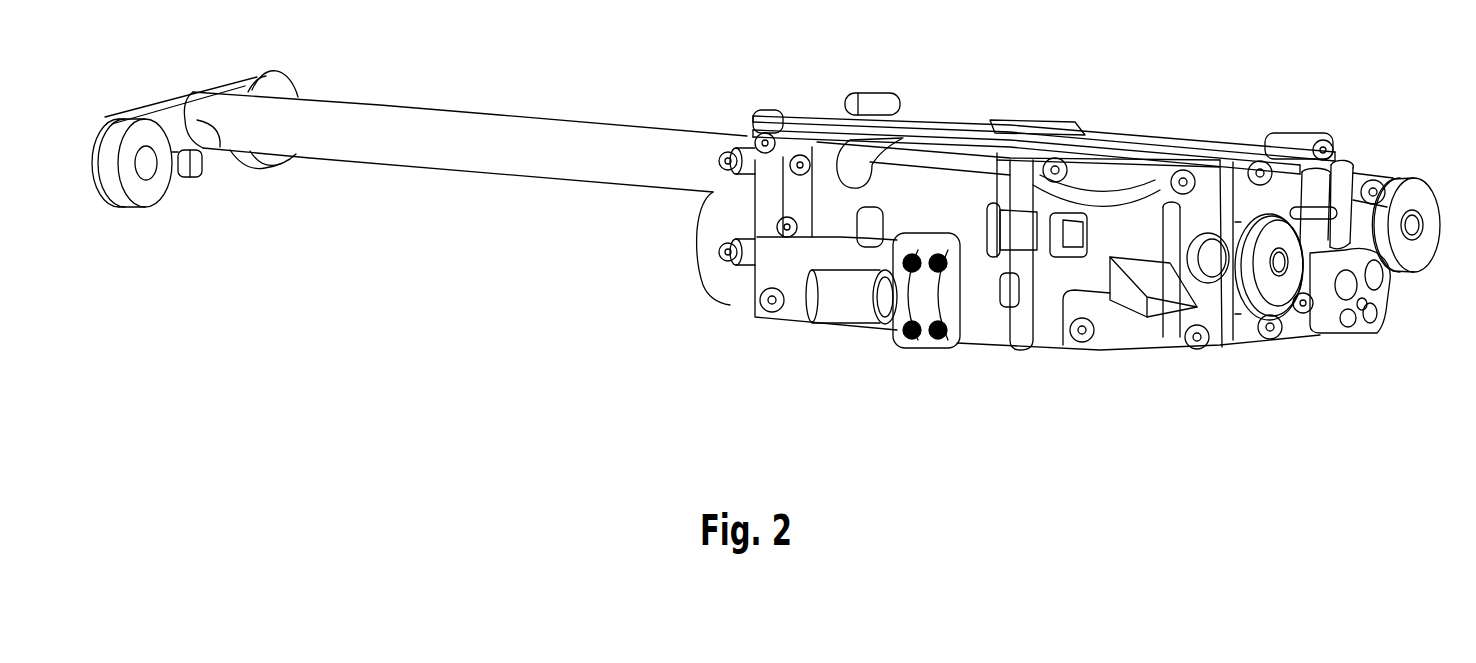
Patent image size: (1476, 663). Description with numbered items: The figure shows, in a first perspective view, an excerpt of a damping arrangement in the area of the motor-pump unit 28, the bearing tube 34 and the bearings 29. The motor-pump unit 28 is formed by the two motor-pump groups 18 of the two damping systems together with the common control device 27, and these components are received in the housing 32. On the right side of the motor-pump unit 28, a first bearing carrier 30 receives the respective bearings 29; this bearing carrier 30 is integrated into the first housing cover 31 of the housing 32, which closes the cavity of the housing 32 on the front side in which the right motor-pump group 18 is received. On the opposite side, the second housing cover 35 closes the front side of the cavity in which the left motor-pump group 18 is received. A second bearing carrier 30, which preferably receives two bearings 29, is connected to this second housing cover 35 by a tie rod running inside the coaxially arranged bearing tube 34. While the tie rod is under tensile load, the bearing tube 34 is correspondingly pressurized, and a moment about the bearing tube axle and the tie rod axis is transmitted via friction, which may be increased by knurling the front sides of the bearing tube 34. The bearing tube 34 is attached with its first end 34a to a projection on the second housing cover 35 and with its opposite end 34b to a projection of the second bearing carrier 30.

The motor-pump group 18 is at (937, 122).
The common control device 27 is at (917, 213).
The motor-pump unit 28 is at (1043, 370).
The bearing 29 is at (283, 88).
The bearing carrier 30 is at (167, 95).
The first housing cover 31 is at (1217, 350).
The housing 32 is at (988, 163).
The bearing tube 34 is at (430, 143).
The first end of the bearing tube 34a is at (720, 182).
The opposite end of the bearing tube 34b is at (197, 120).
The second housing cover 35 is at (733, 210).